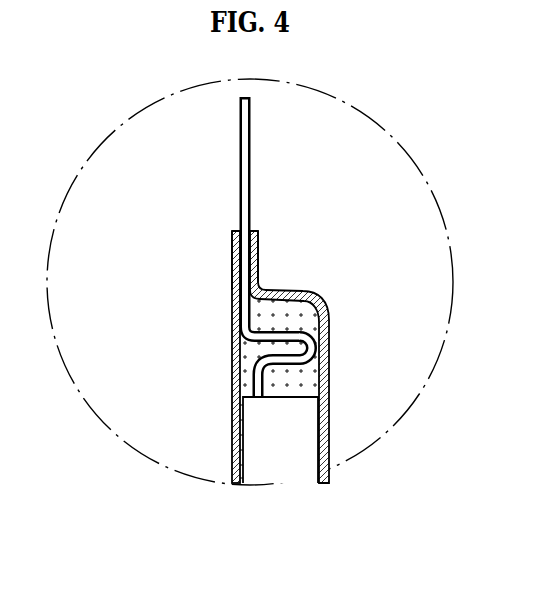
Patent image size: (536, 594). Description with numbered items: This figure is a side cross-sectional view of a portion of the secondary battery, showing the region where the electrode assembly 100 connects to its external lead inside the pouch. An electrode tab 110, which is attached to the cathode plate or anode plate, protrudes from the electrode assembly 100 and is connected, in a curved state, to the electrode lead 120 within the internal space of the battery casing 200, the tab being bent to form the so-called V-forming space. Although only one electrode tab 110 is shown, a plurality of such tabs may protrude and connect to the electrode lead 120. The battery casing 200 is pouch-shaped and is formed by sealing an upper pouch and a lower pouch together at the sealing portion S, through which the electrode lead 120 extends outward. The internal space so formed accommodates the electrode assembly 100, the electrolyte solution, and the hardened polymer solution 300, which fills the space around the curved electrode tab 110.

The electrode assembly 100 is at (307, 463).
The electrode tab 110 is at (288, 364).
The electrode lead 120 is at (245, 178).
The battery casing 200 is at (322, 311).
The hardened polymer solution 300 is at (250, 357).
The sealing portion S is at (258, 246).